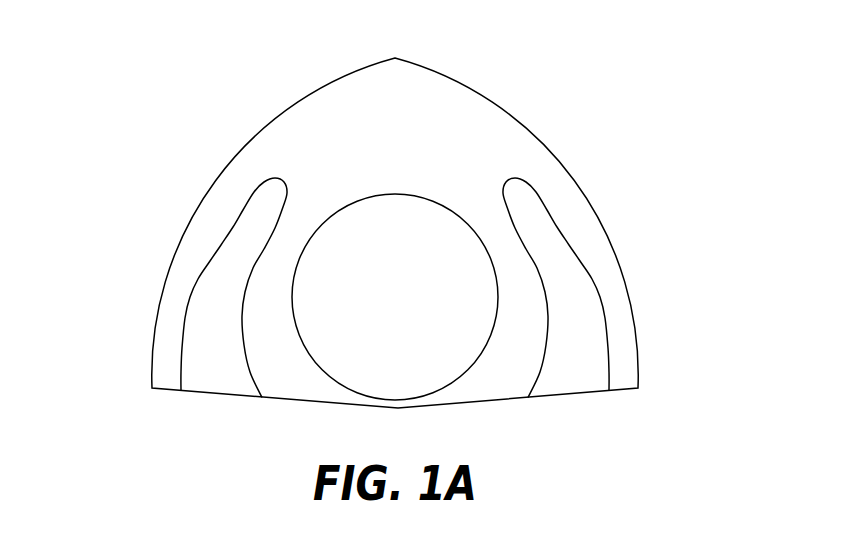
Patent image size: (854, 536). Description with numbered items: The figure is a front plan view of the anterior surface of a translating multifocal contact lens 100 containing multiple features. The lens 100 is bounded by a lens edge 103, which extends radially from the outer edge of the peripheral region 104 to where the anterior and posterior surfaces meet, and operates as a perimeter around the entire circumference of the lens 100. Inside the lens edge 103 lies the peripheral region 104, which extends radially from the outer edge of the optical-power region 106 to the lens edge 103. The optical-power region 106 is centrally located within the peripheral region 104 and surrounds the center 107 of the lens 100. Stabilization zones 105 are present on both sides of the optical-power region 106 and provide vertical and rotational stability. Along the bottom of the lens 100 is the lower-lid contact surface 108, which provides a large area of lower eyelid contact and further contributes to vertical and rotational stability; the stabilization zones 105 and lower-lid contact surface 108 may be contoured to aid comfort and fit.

The translating multifocal contact lens 100 is at (712, 45).
The lens edge 103 is at (313, 87).
The peripheral region 104 is at (308, 142).
The stabilization zone 105 is at (568, 235).
The optical-power region 106 is at (450, 212).
The center 107 is at (395, 298).
The lower-lid contact surface 108 is at (620, 388).